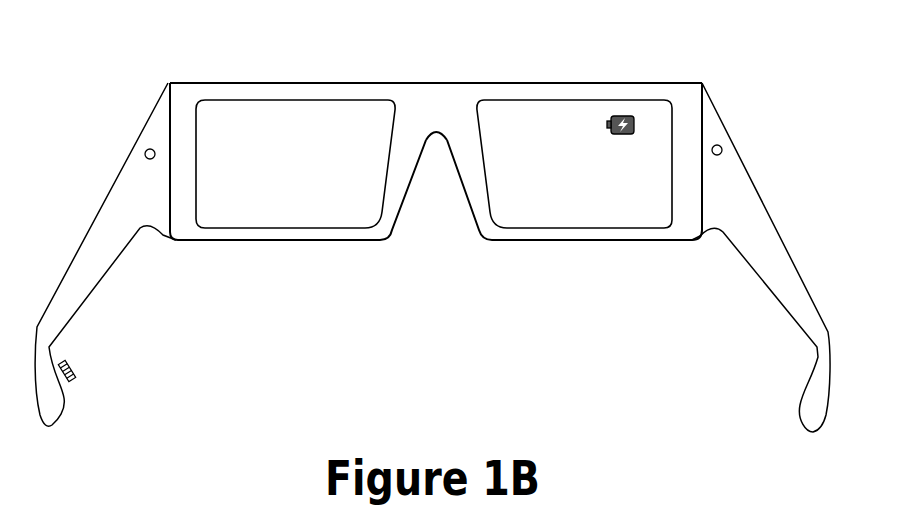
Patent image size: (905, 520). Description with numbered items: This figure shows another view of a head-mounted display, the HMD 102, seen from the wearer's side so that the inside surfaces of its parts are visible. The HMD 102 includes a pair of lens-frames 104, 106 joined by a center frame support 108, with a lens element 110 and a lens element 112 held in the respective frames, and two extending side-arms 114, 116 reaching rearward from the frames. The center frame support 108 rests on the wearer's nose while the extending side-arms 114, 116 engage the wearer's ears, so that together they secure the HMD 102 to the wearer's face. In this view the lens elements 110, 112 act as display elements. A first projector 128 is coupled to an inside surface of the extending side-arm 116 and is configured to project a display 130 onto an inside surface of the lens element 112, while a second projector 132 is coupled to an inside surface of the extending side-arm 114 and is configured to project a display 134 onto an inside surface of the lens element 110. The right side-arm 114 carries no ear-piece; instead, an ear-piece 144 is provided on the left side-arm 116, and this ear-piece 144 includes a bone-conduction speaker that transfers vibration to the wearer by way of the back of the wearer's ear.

The HMD 102 is at (432, 225).
The lens-frame 104 is at (653, 242).
The lens-frame 106 is at (217, 243).
The center frame support 108 is at (434, 82).
The lens element 110 is at (538, 222).
The lens element 112 is at (312, 222).
The extending side-arm 114 is at (757, 187).
The extending side-arm 116 is at (92, 222).
The first projector 128 is at (145, 152).
The second projector 132 is at (718, 145).
The display 130 is at (290, 125).
The display 134 is at (607, 128).
The ear-piece 144 is at (66, 352).